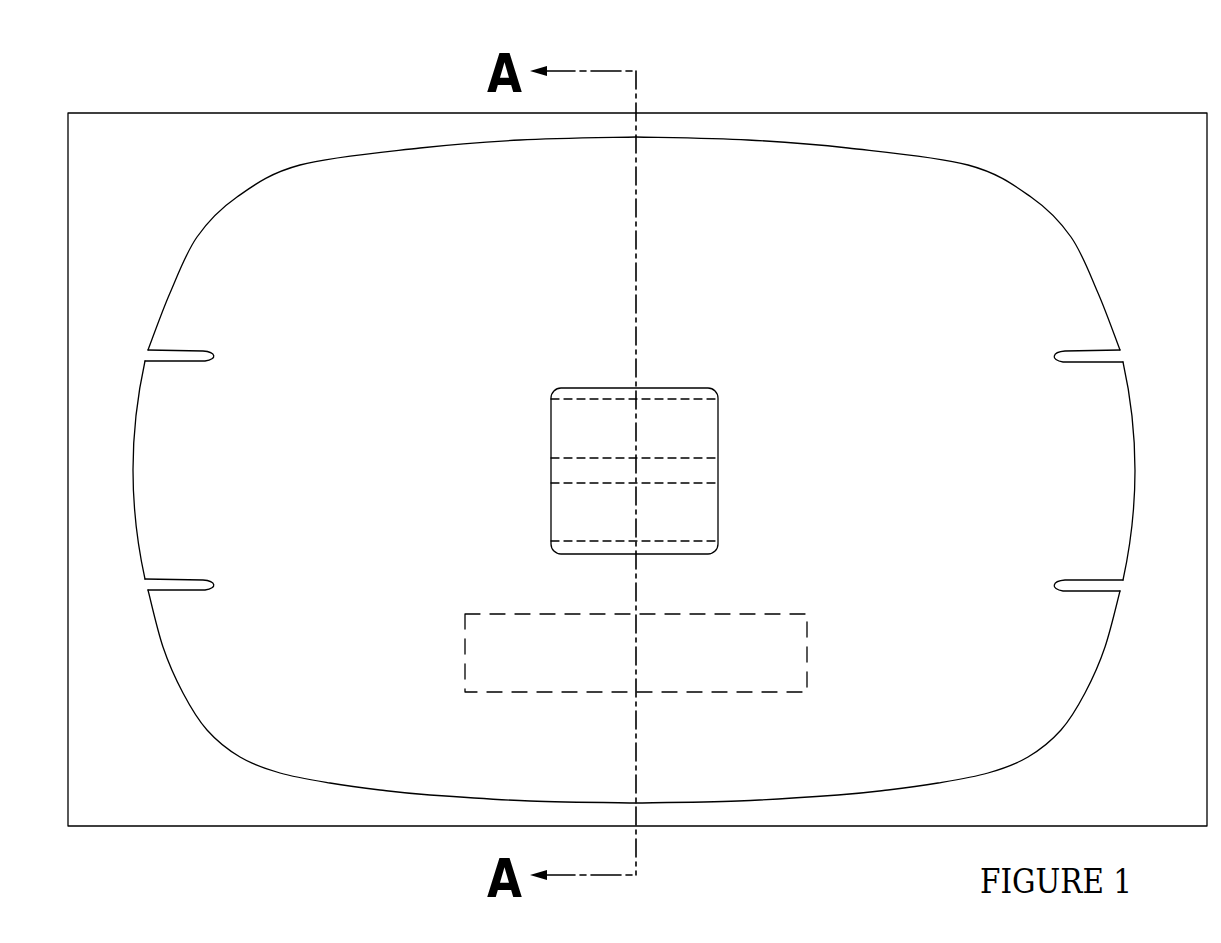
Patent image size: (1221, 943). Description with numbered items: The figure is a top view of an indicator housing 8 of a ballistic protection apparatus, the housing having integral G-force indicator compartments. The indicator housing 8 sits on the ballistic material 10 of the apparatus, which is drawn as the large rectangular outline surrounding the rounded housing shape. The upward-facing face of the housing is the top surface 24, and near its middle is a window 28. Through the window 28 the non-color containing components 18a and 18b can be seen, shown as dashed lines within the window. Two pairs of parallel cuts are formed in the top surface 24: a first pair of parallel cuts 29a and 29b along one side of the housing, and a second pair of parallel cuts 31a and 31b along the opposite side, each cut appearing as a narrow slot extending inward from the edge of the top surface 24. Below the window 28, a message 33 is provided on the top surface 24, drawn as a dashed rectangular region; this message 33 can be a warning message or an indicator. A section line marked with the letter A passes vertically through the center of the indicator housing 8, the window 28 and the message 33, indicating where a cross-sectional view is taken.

The indicator housing 8 is at (1003, 128).
The ballistic material 10 is at (182, 148).
The top surface 24 is at (960, 283).
The window 28 is at (667, 388).
The non-color containing component 18a is at (580, 400).
The non-color containing component 18b is at (580, 482).
The parallel cut 29a is at (1102, 348).
The parallel cut 29b is at (1102, 578).
The parallel cut 31a is at (172, 349).
The parallel cut 31b is at (172, 578).
The message 33 is at (500, 614).